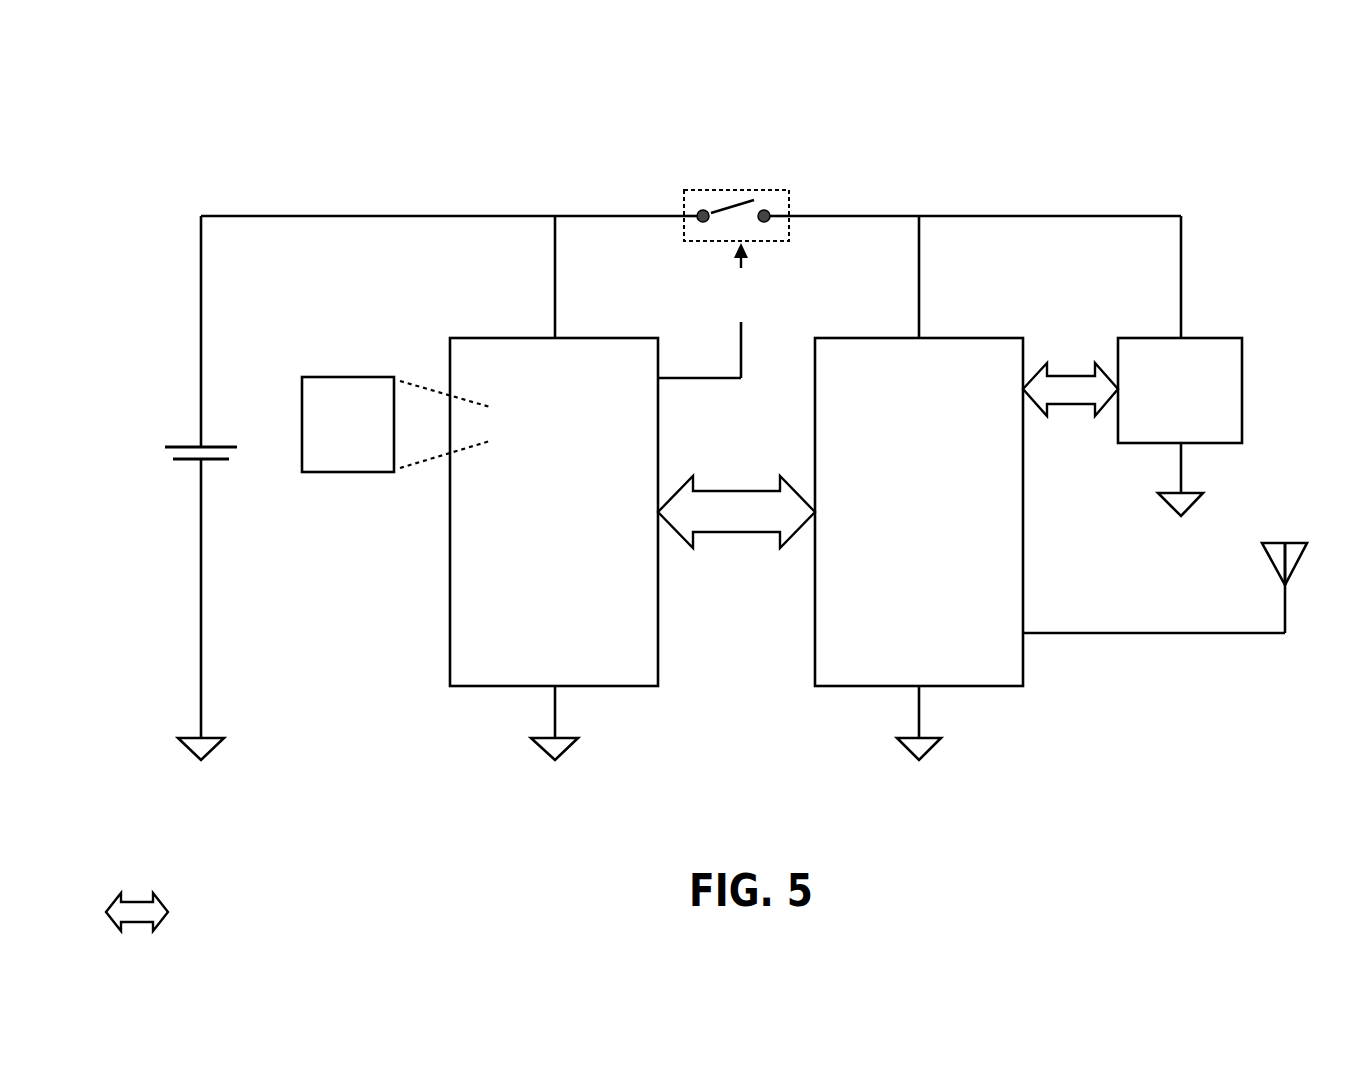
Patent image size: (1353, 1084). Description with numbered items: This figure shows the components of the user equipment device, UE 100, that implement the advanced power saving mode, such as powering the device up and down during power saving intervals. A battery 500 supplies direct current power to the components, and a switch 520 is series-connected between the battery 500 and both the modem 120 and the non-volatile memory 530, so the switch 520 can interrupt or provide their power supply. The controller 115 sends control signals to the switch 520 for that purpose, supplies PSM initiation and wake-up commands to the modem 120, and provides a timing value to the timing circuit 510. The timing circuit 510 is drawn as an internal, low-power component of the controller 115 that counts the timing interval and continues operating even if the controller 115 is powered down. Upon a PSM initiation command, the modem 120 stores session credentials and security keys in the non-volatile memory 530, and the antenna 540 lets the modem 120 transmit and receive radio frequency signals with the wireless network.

The user equipment device (UE) 100 is at (192, 88).
The battery 500 is at (175, 430).
The timing circuit 510 is at (302, 382).
The controller 115 is at (450, 339).
The switch 520 is at (789, 202).
The modem 120 is at (1023, 344).
The non-volatile memory 530 is at (1239, 341).
The antenna 540 is at (1283, 526).